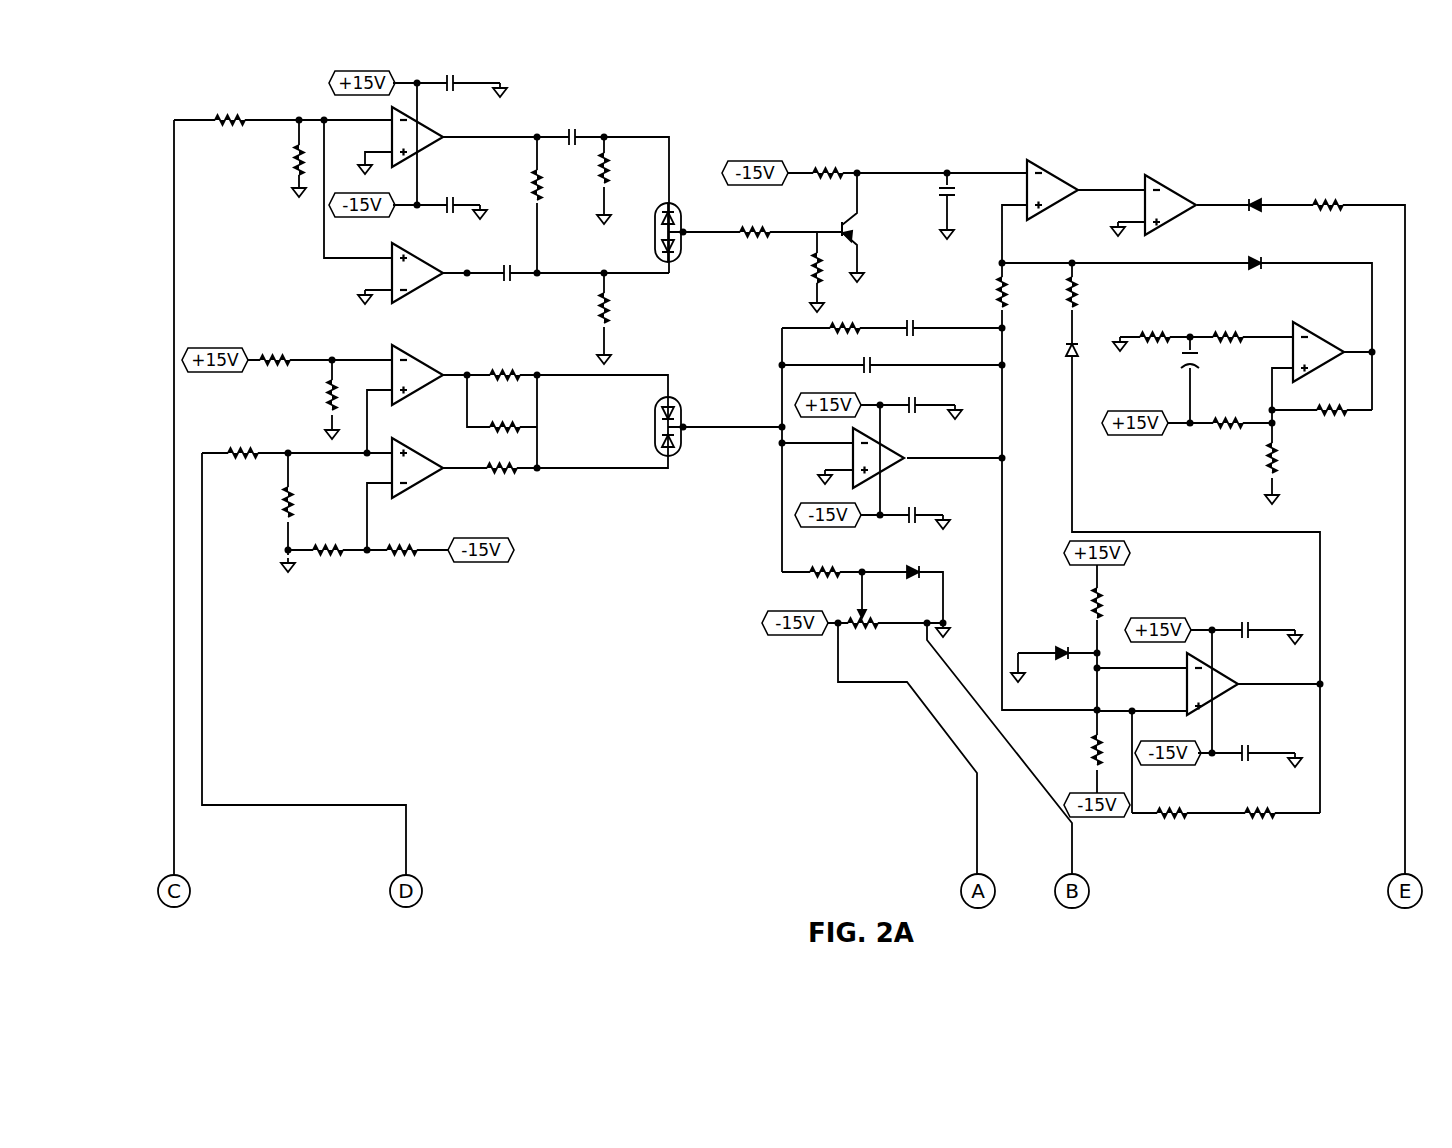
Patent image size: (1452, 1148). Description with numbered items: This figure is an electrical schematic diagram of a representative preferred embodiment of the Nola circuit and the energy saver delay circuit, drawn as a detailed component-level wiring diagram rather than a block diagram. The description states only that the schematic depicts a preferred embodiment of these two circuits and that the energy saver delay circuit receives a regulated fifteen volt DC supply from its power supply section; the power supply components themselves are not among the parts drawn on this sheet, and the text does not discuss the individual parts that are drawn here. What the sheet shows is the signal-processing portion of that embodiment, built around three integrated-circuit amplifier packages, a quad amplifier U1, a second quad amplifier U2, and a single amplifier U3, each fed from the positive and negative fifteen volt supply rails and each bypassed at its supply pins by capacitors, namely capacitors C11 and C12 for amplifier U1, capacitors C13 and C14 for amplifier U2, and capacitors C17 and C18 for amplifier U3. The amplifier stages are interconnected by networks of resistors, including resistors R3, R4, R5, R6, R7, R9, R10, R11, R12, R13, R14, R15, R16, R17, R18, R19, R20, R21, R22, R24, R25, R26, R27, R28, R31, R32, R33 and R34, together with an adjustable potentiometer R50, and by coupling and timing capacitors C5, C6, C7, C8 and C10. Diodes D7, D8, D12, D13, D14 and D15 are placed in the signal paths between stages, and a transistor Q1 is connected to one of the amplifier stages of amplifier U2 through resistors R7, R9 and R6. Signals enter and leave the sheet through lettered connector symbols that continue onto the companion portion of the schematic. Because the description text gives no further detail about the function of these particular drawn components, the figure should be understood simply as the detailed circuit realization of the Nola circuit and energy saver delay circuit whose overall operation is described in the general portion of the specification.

The resistor 220K 1W R3 is at (232, 127).
The resistor 10K R4 is at (285, 153).
The capacitor 0.1uF C11 is at (455, 80).
The capacitor 0.1uF C12 is at (445, 206).
The quad op-amp LM324 U1 is at (429, 310).
The capacitor 0.1uF C5 is at (568, 135).
The capacitor 0.1uF C8 is at (688, 317).
The resistor 22K R18 is at (549, 184).
The resistor 3.3K R5 is at (621, 173).
The dual diode BAW562XCT D7 is at (619, 234).
The resistor R6 is at (712, 290).
The resistor 3.3K R7 is at (754, 235).
The resistor 120K R9 is at (830, 174).
The PNP transistor FLMT2907CT Q1 is at (893, 240).
The capacitor 0.1uF C7 is at (962, 200).
The quad op-amp LM324 U2 is at (1101, 320).
The diode FMMD914CT D13 is at (1252, 173).
The resistor 2.2K R11 is at (1327, 197).
The diode FMMD914CT D12 is at (1284, 268).
The resistor 10K R10 is at (1015, 293).
The resistor R24 is at (954, 431).
The diode D8 is at (859, 402).
The resistor R28 is at (1192, 371).
The resistor 22K R27 is at (1229, 313).
The capacitor 2.2uF C10 is at (1168, 367).
The resistor 430K R26 is at (1289, 458).
The resistor 150K R25 is at (1341, 432).
The resistor 220K R12 is at (276, 358).
The resistor 12K R13 is at (318, 399).
The resistor 220K 1W R14 is at (239, 451).
The resistor 10K R15 is at (271, 501).
The resistor 220 R16 is at (332, 548).
The resistor 220K R17 is at (406, 548).
The resistor 22K R19 is at (506, 372).
The resistor 22K R20 is at (526, 424).
The resistor 22K R21 is at (501, 468).
The resistor 51K R22 is at (836, 328).
The capacitor 0.1uF C6 is at (927, 323).
The capacitor 0.1uF C13 is at (915, 404).
The capacitor 0.1uF C14 is at (910, 513).
The diode FMMD914CT D14 is at (963, 571).
The potentiometer 25K R50 is at (870, 631).
The resistor 43K R34 is at (1076, 598).
The diode FMMD914CT D15 is at (1038, 669).
The op-amp LM741 U3 is at (1232, 683).
The capacitor 0.1uF C17 is at (1251, 629).
The capacitor 0.1uF C18 is at (1252, 752).
The resistor 47K R33 is at (1079, 757).
The resistor 27K R31 is at (1171, 808).
The resistor 100K R32 is at (1266, 808).